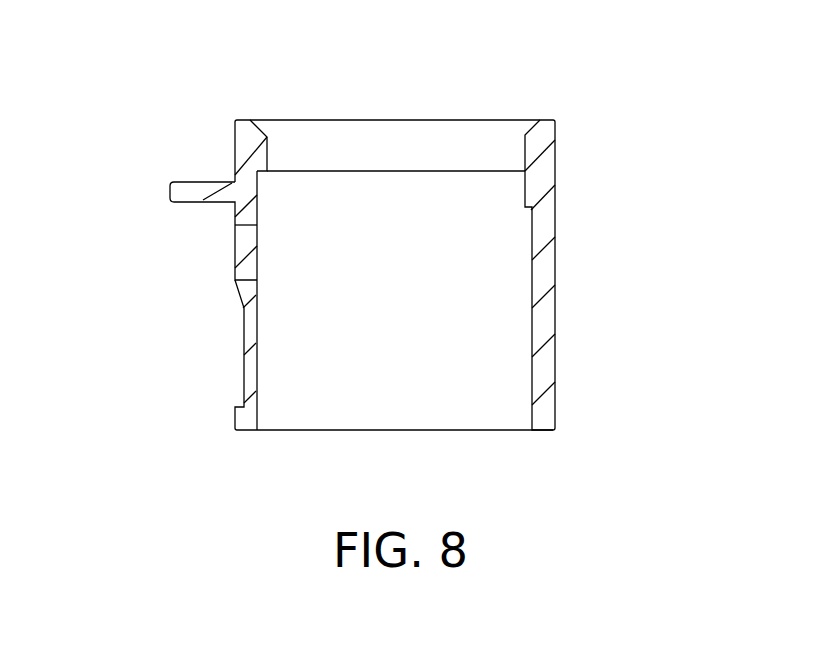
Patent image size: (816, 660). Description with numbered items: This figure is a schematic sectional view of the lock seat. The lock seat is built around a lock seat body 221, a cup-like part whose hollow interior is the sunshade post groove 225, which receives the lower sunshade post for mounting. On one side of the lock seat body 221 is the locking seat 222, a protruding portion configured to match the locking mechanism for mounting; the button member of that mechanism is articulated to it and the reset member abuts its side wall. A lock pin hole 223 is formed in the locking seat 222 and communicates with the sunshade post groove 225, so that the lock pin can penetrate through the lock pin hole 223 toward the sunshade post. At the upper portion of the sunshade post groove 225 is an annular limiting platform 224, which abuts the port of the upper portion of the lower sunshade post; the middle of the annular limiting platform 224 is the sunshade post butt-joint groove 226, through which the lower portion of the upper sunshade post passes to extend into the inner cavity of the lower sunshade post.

The lock seat body 221 is at (545, 170).
The locking seat 222 is at (232, 200).
The lock pin hole 223 is at (245, 250).
The annular limiting platform 224 is at (257, 170).
The sunshade post groove 225 is at (422, 320).
The sunshade post butt-joint groove 226 is at (375, 147).